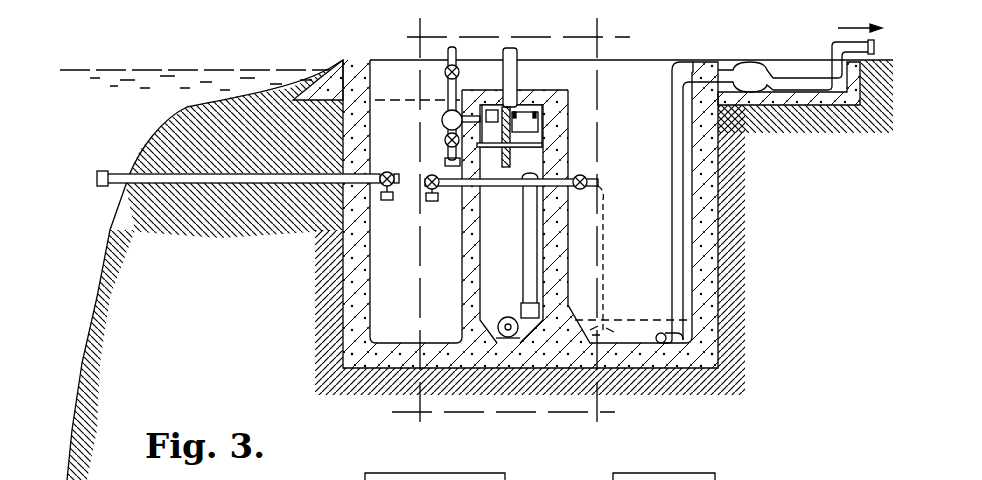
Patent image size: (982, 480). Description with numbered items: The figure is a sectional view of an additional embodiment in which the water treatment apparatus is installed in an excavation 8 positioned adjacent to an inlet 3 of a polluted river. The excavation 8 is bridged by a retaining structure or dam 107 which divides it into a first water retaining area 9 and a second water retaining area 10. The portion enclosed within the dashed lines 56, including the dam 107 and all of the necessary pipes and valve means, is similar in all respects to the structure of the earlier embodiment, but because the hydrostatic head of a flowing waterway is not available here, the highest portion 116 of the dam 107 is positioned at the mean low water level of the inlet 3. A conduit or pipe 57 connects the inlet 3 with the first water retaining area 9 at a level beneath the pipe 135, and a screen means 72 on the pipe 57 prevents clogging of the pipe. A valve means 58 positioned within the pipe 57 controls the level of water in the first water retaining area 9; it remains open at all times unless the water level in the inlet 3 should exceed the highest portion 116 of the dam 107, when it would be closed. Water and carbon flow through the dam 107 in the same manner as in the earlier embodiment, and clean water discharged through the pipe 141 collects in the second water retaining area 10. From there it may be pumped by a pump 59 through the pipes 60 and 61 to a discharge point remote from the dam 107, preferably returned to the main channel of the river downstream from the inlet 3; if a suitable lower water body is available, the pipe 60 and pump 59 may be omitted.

The inlet 3 is at (146, 69).
The screen means 72 is at (104, 173).
The conduit or pipe 57 is at (226, 186).
The dashed lines 56 is at (472, 36).
The pipe 135 is at (447, 109).
The valve means 58 is at (403, 164).
The highest portion of dam 116 is at (578, 78).
The retaining structure or dam 107 is at (568, 142).
The pipe 141 is at (568, 168).
The pump 59 is at (746, 62).
The pipe 61 is at (800, 62).
The pipe 60 is at (672, 228).
The excavation 8 is at (718, 218).
The first water retaining area 9 is at (402, 293).
The second water retaining area 10 is at (652, 293).